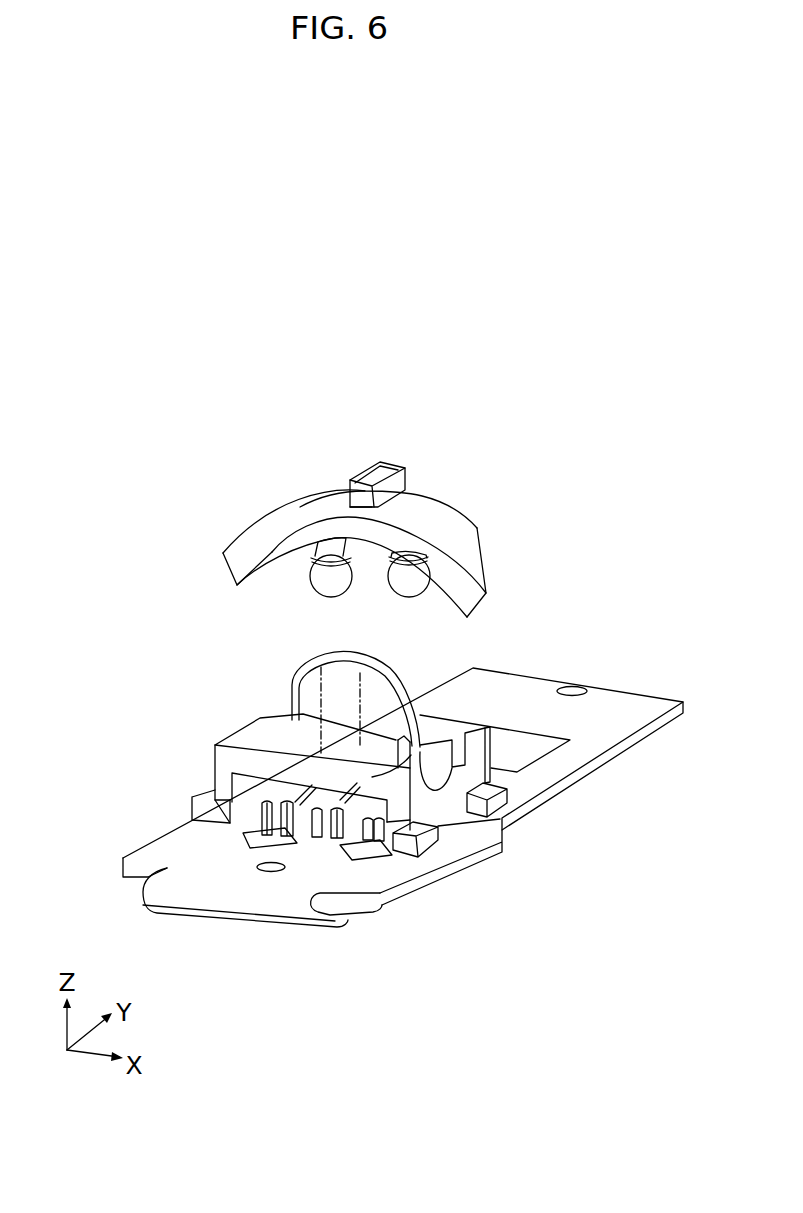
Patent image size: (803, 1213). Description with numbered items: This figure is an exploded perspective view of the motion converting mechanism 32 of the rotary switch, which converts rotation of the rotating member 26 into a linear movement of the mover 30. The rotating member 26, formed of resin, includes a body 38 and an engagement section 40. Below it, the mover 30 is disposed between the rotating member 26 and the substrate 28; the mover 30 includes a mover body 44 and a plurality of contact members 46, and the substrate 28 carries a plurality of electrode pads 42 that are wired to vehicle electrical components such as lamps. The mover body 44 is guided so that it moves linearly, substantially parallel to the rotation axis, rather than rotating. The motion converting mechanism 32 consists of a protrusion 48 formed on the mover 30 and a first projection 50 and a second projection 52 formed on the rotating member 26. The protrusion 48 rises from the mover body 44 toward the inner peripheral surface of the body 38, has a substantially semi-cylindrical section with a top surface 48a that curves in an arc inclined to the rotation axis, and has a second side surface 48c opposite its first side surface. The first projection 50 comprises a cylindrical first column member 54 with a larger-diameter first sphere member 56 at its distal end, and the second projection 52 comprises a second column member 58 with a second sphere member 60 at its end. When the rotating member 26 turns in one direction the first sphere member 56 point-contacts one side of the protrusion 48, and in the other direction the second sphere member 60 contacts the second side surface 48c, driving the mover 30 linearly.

The rotating member 26 is at (438, 516).
The substrate 28 is at (173, 840).
The mover 30 is at (245, 738).
The motion converting mechanism 32 is at (544, 524).
The body 38 is at (330, 500).
The engagement section 40 is at (380, 466).
The electrode pads 42 is at (260, 838).
The mover body 44 is at (260, 730).
The contact members 46 is at (268, 822).
The protrusion 48 is at (342, 653).
The top surface 48a is at (370, 668).
The second side surface 48c is at (305, 685).
The first projection 50 is at (566, 548).
The second projection 52 is at (182, 495).
The first column member 54 is at (420, 556).
The first sphere member 56 is at (408, 582).
The second column member 58 is at (318, 542).
The second sphere member 60 is at (322, 572).